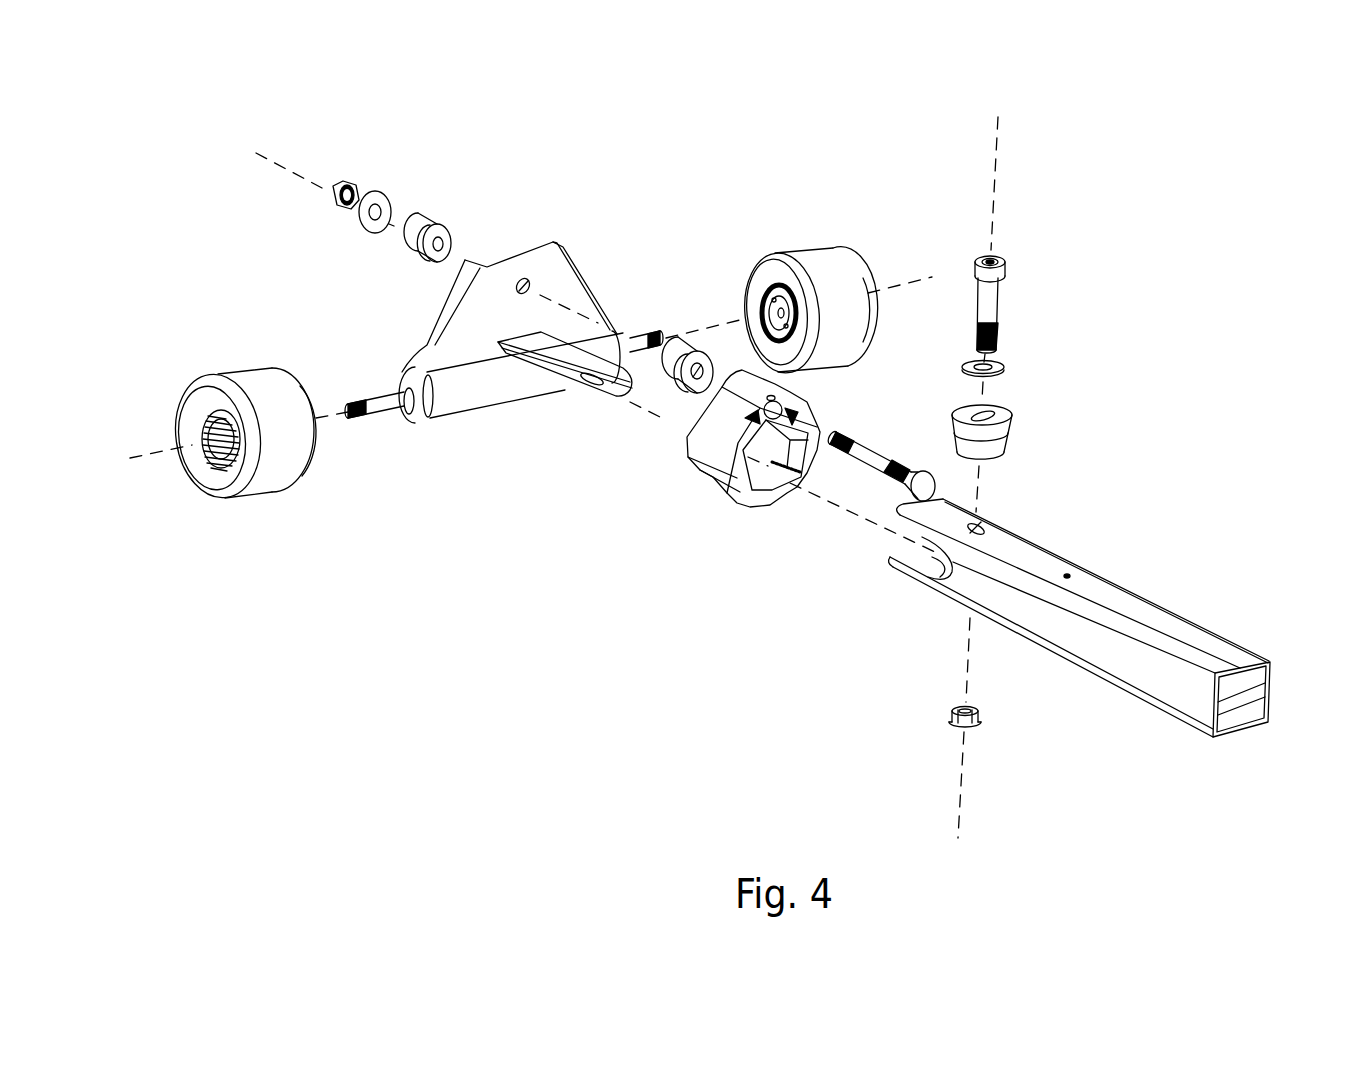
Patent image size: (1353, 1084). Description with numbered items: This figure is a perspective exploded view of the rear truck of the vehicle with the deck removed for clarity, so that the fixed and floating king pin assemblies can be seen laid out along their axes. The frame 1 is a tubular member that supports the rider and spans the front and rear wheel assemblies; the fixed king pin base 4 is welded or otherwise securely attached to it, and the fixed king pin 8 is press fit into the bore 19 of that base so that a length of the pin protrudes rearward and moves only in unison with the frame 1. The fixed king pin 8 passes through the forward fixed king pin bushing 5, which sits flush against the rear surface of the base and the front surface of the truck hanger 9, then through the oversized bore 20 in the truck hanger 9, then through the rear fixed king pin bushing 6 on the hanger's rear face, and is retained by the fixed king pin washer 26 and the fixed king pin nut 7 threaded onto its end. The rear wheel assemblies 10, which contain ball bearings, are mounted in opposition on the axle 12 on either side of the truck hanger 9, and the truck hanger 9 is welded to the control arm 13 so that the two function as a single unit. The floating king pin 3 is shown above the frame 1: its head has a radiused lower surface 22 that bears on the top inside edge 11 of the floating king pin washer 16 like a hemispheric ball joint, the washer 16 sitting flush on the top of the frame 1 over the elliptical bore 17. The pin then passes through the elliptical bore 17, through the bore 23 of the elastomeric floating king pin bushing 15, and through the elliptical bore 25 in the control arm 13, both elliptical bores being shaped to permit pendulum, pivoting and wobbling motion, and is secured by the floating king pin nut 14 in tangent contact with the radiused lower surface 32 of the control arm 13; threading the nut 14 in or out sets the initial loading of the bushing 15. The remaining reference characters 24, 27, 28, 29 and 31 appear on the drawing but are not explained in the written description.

The frame 1 is at (1188, 631).
The floating king pin 3 is at (994, 302).
The fixed king pin base 4 is at (706, 461).
The forward fixed king pin bushing 5 is at (684, 352).
The rear fixed king pin bushing 6 is at (428, 221).
The fixed king pin nut 7 is at (352, 186).
The fixed king pin 8 is at (900, 470).
The truck hanger 9 is at (472, 346).
The rear wheel assemblies 10 is at (259, 387).
The top inside edge of floating king pin washer 11 is at (968, 363).
The axle 12 is at (655, 333).
The control arm 13 is at (552, 373).
The floating king pin nut 14 is at (953, 726).
The floating king pin bushing 15 is at (997, 445).
The floating king pin washer 16 is at (1003, 366).
The elliptical bore 17 is at (982, 523).
The bore 19 is at (790, 402).
The oversized bore 20 is at (530, 283).
The radiused lower surface 22 is at (1004, 273).
The floating king pin bushing bore 23 is at (985, 418).
The hole in spacer 24 is at (697, 372).
The elliptical bore 25 is at (599, 367).
The fixed king pin washer 26 is at (390, 204).
The vertical axis 27 is at (970, 494).
The pivot axis 28 is at (578, 340).
The axle axis 29 is at (515, 378).
The slot in tube 31 is at (889, 566).
The radiused lower surface of control arm 32 is at (602, 384).